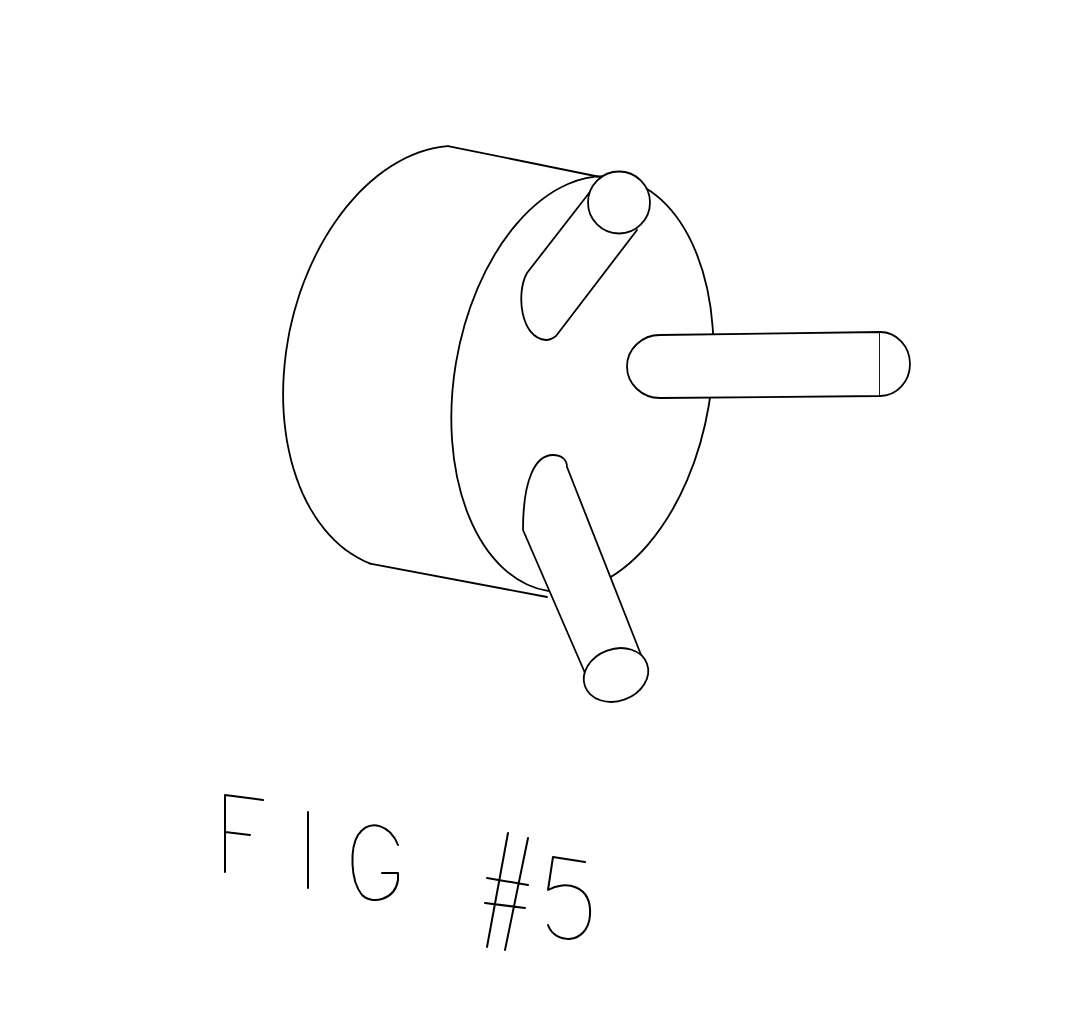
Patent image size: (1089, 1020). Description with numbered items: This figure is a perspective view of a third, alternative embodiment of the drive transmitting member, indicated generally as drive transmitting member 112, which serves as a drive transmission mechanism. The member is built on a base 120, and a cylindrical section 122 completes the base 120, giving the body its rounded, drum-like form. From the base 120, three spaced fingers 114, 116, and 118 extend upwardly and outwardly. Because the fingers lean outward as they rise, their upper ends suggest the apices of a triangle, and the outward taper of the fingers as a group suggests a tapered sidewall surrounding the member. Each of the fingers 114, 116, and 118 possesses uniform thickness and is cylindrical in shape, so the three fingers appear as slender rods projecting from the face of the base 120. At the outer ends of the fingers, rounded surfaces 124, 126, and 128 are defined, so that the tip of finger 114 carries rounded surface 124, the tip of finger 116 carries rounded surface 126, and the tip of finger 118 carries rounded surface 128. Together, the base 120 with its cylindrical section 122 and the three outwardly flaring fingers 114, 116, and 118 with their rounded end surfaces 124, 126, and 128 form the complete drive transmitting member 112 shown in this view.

The drive transmitting member 112 is at (515, 368).
The finger 114 is at (563, 197).
The finger 116 is at (837, 350).
The finger 118 is at (678, 599).
The base 120 is at (639, 384).
The cylindrical section 122 is at (347, 449).
The rounded surface 124 is at (659, 148).
The rounded surface 126 is at (1031, 454).
The rounded surface 128 is at (699, 691).